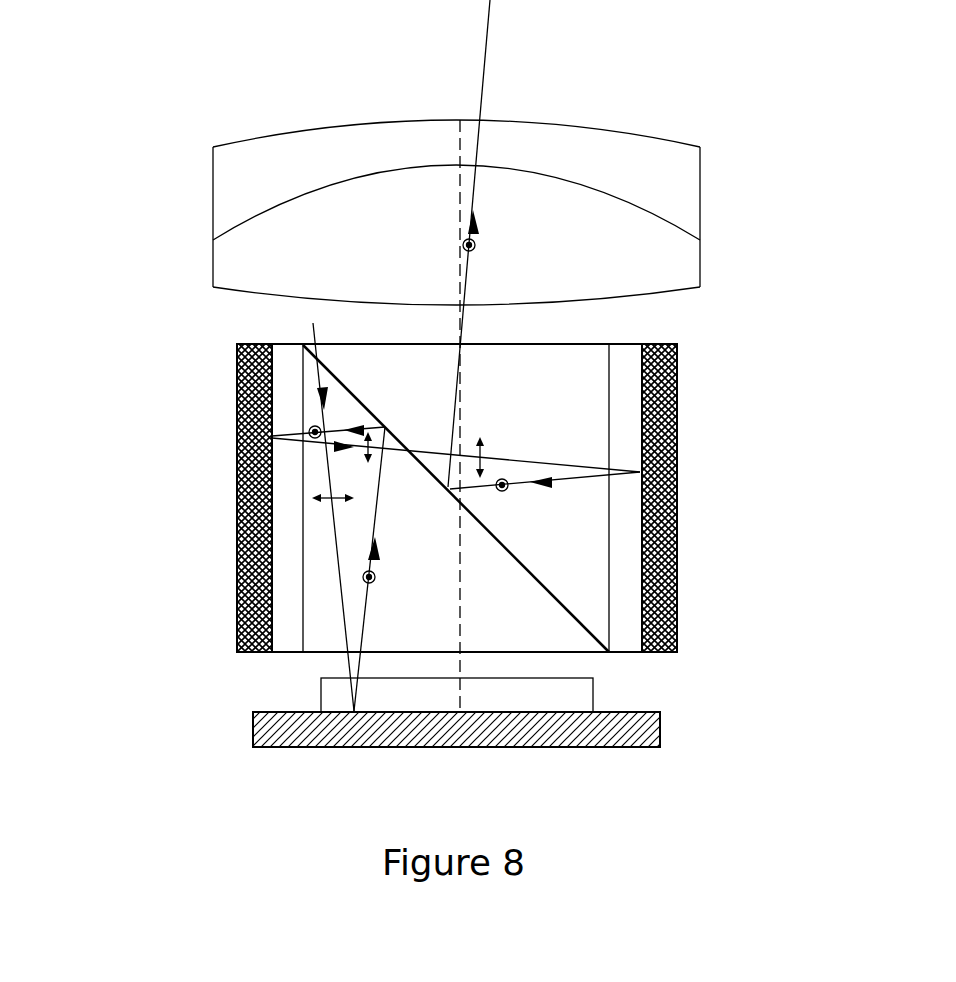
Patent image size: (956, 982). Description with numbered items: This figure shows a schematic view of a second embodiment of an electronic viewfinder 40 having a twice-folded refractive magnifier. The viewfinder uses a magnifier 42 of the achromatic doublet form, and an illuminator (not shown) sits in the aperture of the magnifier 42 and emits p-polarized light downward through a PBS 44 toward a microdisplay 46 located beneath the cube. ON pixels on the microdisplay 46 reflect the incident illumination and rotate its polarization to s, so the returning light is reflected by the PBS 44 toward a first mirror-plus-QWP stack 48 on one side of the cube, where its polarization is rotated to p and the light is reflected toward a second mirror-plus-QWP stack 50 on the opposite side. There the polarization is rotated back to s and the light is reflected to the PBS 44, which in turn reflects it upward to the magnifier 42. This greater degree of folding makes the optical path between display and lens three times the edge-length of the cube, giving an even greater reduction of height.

The electronic viewfinder 40 is at (178, 775).
The magnifier 42 is at (166, 215).
The PBS 44 is at (597, 626).
The microdisplay 46 is at (514, 715).
The first mirror-plus-QWP stack 48 is at (263, 684).
The second mirror-plus-QWP stack 50 is at (668, 683).